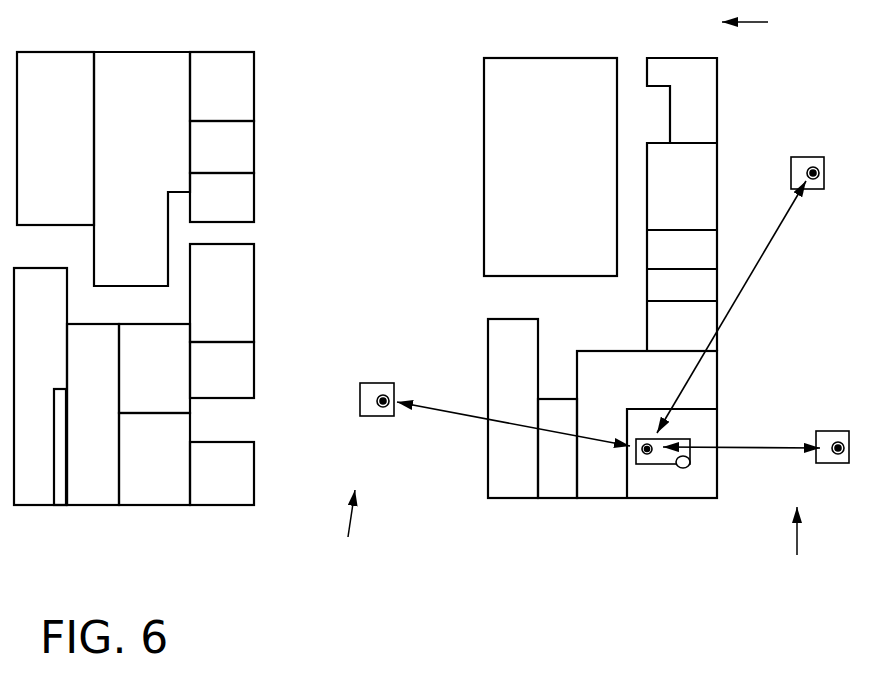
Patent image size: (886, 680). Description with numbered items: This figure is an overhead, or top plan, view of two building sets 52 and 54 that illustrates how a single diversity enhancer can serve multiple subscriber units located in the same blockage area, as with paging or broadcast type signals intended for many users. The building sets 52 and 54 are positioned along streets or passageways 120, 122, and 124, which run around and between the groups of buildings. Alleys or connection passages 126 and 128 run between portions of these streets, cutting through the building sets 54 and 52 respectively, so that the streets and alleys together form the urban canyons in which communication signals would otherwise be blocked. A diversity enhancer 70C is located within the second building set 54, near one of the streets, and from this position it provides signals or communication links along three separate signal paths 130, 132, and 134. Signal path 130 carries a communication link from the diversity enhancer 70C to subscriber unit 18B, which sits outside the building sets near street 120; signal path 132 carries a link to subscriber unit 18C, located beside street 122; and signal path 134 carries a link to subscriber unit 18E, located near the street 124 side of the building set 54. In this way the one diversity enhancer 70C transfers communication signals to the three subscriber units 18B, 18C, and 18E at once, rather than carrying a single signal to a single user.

The building set 52 is at (134, 321).
The building set 54 is at (600, 321).
The alley or connection passage 128 is at (127, 306).
The alley or connection passage 126 is at (593, 316).
The street or passageway 120 is at (352, 534).
The street or passageway 122 is at (799, 551).
The street or passageway 124 is at (770, 23).
The signal path 130 is at (472, 413).
The signal path 132 is at (748, 450).
The signal path 134 is at (753, 272).
The subscriber unit 18B is at (375, 416).
The subscriber unit 18C is at (832, 431).
The subscriber unit 18E is at (815, 189).
The diversity enhancer 70C is at (660, 465).